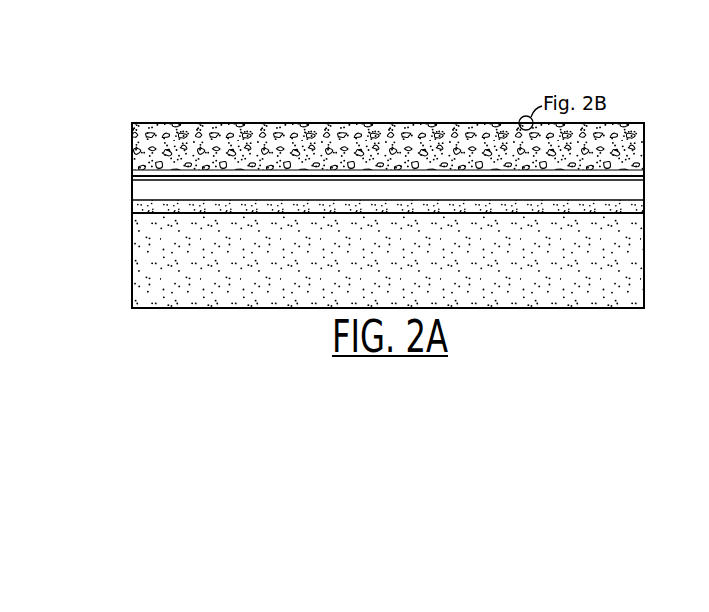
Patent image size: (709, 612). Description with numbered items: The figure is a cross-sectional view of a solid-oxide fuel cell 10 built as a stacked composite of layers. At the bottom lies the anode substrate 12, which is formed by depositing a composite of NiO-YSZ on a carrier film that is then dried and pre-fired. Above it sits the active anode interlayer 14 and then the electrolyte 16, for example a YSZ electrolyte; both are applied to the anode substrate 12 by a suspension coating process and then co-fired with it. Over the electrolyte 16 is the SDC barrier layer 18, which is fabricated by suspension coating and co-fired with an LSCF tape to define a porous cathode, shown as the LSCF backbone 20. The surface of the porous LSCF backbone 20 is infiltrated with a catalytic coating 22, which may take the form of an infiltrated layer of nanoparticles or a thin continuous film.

The solid-oxide fuel cell 10 is at (508, 70).
The anode substrate 12 is at (402, 268).
The active anode interlayer 14 is at (640, 205).
The electrolyte 16 is at (642, 190).
The SDC barrier layer 18 is at (642, 176).
The LSCF backbone 20 is at (312, 140).
The catalytic coating 22 is at (425, 123).